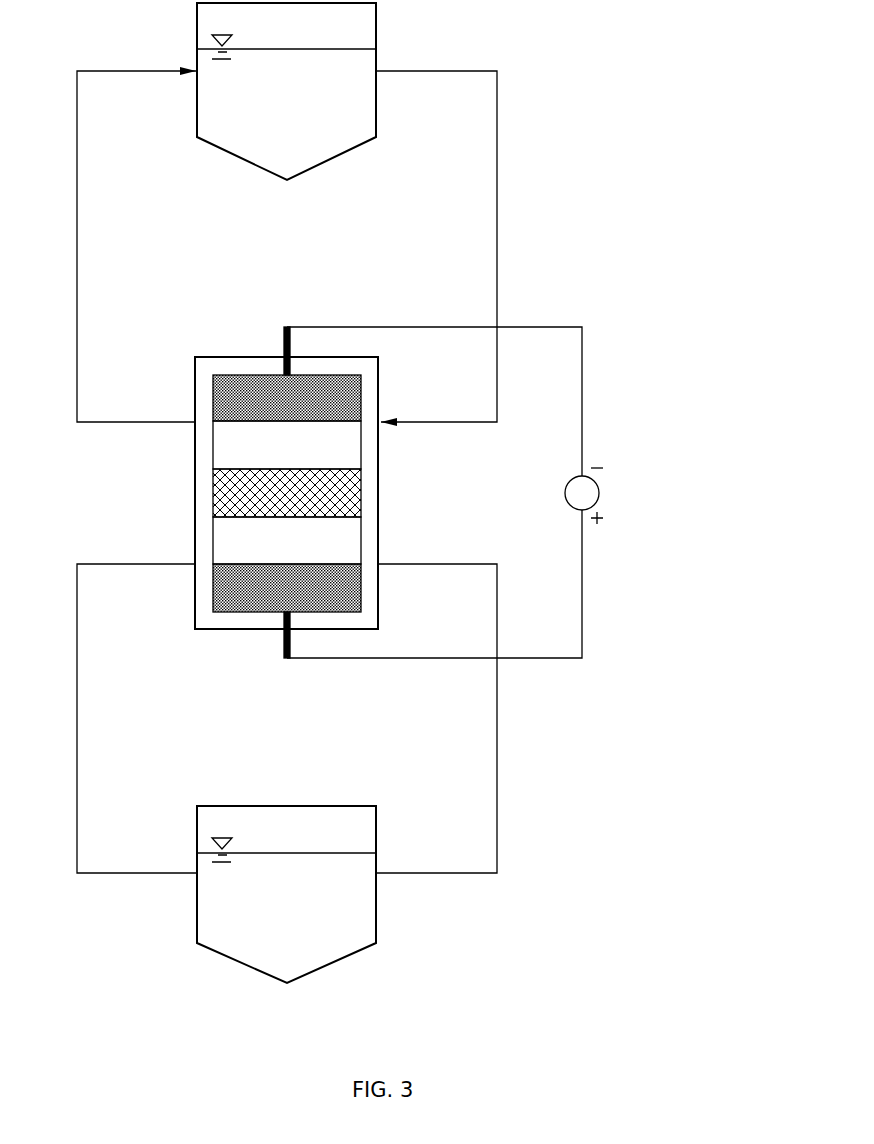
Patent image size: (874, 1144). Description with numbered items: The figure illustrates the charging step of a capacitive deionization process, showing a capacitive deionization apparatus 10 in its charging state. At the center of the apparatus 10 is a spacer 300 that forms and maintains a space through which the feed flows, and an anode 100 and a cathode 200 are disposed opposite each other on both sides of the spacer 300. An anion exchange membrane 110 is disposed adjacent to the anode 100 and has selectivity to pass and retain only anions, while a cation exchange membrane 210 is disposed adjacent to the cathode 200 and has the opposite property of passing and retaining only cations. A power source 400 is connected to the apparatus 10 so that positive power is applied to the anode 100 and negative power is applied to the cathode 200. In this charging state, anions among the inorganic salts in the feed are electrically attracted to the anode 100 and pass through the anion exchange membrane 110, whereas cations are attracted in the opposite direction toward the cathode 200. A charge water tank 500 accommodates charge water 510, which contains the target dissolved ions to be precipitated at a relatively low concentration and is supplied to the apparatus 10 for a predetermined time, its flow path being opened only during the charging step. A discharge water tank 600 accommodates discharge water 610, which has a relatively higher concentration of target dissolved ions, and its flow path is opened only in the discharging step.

The capacitive deionization apparatus 10 is at (392, 481).
The anode 100 is at (212, 582).
The anion exchange membrane 110 is at (212, 536).
The cathode 200 is at (212, 396).
The cation exchange membrane 210 is at (212, 443).
The spacer 300 is at (212, 489).
The power source 400 is at (628, 485).
The charge water tank 500 is at (377, 22).
The charge water 510 is at (286, 88).
The discharge water tank 600 is at (377, 908).
The discharge water 610 is at (286, 892).